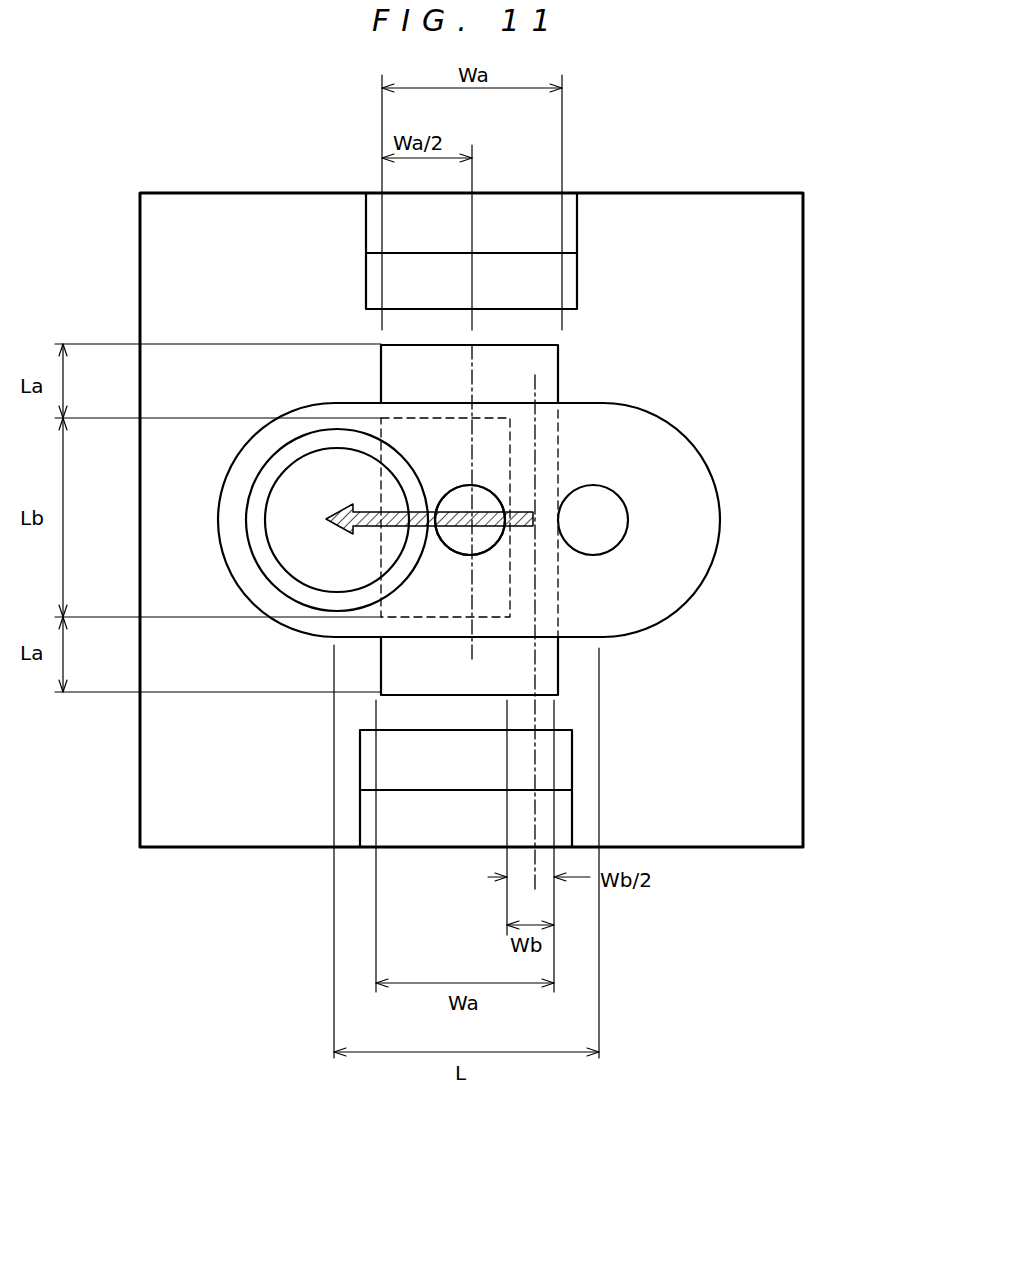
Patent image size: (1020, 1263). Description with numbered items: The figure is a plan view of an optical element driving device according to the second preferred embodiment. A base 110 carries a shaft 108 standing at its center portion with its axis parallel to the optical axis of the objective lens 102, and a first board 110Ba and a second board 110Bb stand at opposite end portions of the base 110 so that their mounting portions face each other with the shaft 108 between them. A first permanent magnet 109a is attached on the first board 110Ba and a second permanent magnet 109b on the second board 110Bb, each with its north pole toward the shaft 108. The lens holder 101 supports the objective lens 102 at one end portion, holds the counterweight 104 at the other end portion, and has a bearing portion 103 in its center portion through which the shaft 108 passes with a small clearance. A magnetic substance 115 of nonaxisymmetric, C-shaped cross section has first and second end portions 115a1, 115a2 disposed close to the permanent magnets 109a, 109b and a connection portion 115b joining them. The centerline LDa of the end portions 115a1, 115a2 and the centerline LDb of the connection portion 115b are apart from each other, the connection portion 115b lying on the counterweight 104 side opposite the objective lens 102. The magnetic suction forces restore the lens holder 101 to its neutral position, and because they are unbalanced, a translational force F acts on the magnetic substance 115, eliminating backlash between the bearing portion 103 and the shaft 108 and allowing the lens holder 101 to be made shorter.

The base 110 is at (794, 522).
The first board 110Ba is at (569, 235).
The first permanent magnet 109a is at (569, 274).
The second permanent magnet 109b is at (418, 777).
The second board 110Bb is at (443, 815).
The magnetic substance 115 is at (557, 670).
The first end portion of the magnetic substance 115a1 is at (396, 378).
The second end portion of the magnetic substance 115a2 is at (407, 682).
The connection portion of the magnetic substance 115b is at (548, 476).
The lens holder 101 is at (687, 455).
The objective lens 102 is at (292, 512).
The shaft 108 is at (450, 503).
The bearing portion 103 is at (450, 547).
The counterweight 104 is at (619, 519).
The translational force F is at (345, 511).
The centerline of the end portions in the direction of width LDa is at (472, 370).
The centerline of the connection portion in the direction of width LDb is at (535, 388).